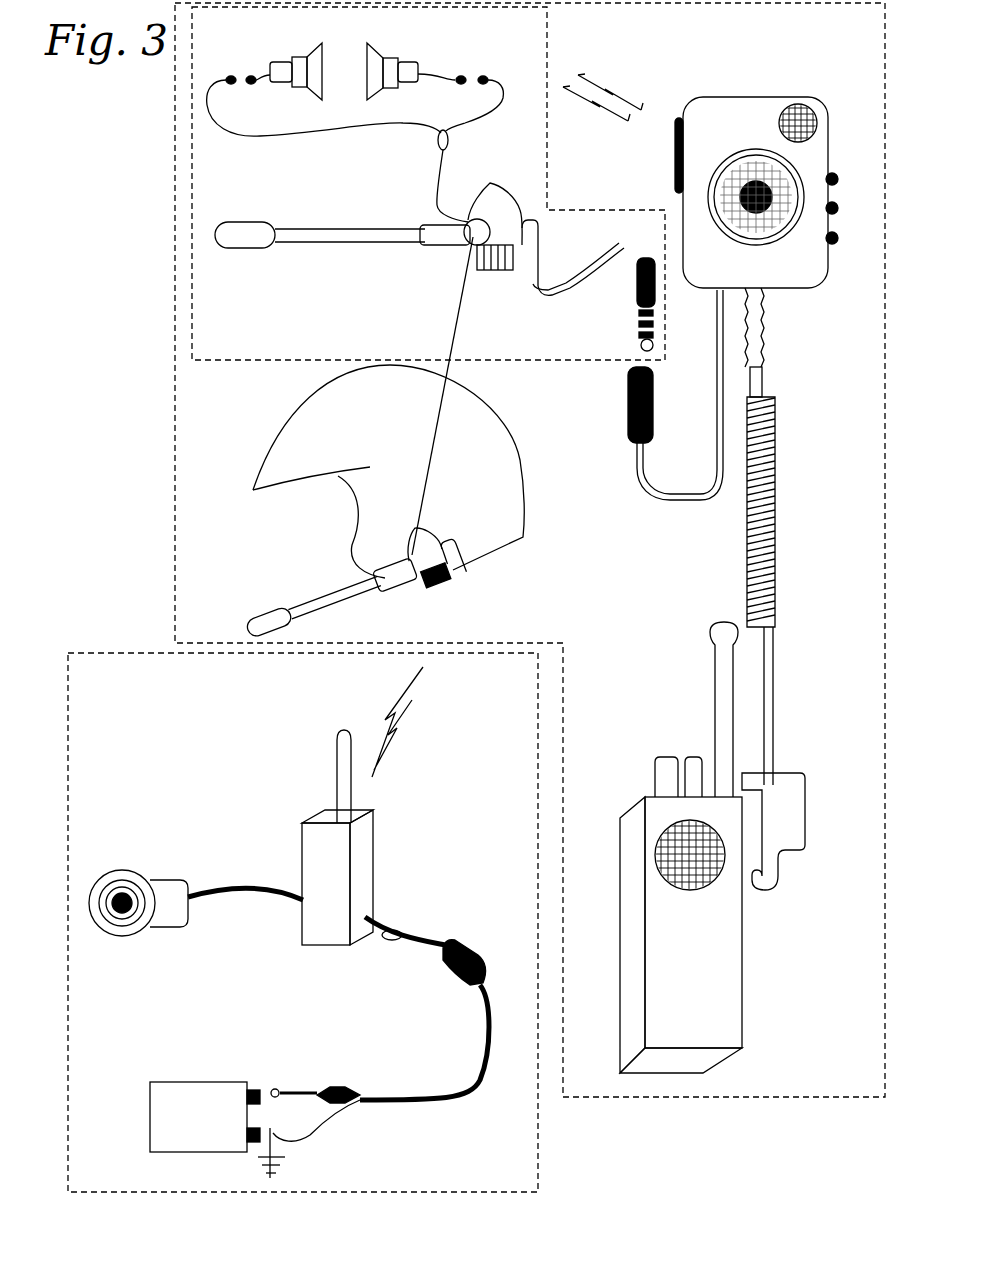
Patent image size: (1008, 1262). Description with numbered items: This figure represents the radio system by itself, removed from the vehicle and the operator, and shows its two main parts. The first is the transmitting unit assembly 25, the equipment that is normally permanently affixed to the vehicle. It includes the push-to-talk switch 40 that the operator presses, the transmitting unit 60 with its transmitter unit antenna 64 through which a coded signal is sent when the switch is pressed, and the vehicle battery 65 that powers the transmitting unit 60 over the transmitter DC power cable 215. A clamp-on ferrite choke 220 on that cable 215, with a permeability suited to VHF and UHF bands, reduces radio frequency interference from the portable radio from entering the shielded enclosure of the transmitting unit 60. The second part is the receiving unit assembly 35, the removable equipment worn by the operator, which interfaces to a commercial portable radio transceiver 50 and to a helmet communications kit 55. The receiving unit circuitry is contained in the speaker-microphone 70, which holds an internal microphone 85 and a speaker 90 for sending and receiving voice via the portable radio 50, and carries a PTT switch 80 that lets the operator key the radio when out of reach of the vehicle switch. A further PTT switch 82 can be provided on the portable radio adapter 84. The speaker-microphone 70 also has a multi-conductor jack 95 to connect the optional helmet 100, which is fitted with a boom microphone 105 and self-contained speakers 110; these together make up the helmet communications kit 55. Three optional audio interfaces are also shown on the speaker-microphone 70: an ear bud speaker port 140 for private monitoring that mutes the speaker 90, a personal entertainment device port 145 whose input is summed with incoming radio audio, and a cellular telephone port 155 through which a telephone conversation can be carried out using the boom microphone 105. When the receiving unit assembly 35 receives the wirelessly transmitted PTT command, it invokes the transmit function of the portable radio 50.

The transmitting unit assembly 25 is at (92, 632).
The receiving unit assembly 35 is at (150, 567).
The push-to-talk switch 40 is at (108, 870).
The portable radio transceiver 50 is at (742, 1017).
The helmet communications kit 55 is at (273, 366).
The transmitting unit 60 is at (378, 855).
The transmitter unit antenna 64 is at (338, 760).
The vehicle battery 65 is at (148, 1113).
The speaker-microphone 70 is at (770, 93).
The PTT switch 80 is at (674, 162).
The PTT switch 82 is at (791, 768).
The portable radio adapter 84 is at (805, 852).
The internal microphone 85 is at (810, 93).
The speaker 90 is at (737, 148).
The multi-conductor jack 95 is at (626, 412).
The helmet 100 is at (523, 524).
The boom microphone 105 is at (265, 222).
The speaker 110 is at (288, 55).
The ear bud speaker port 140 is at (835, 246).
The personal entertainment device port 145 is at (836, 173).
The cellular telephone port 155 is at (838, 204).
The transmitter DC power cable 215 is at (376, 930).
The clamp-on ferrite choke 220 is at (457, 950).